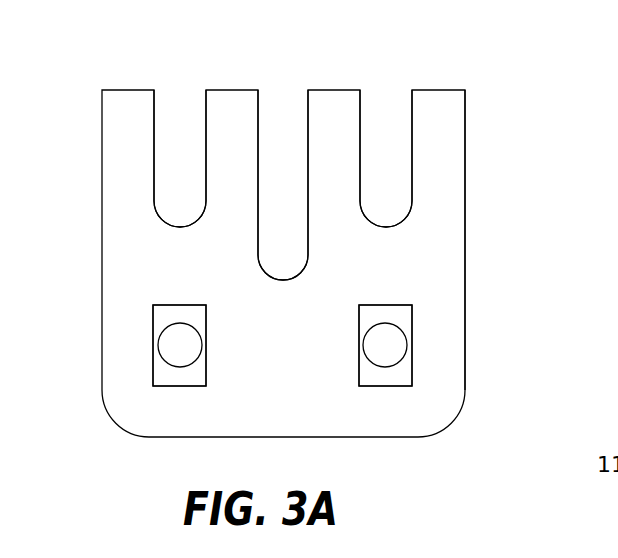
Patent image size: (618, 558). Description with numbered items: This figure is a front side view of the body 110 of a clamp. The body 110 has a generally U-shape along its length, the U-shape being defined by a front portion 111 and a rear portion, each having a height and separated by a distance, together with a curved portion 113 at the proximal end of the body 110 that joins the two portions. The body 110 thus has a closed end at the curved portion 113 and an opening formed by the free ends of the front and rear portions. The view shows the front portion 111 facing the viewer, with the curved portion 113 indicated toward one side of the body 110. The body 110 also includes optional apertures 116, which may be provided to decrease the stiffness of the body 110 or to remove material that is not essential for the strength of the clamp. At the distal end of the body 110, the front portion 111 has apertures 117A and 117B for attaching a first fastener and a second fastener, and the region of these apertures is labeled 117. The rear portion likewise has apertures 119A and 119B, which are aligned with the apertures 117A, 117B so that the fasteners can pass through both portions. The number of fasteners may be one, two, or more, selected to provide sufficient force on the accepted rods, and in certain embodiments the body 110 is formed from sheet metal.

The body 110 is at (118, 45).
The front portion 111 is at (300, 348).
The curved portion 113 is at (473, 112).
The apertures 116 is at (390, 90).
The mounting regions 117 is at (78, 272).
The aperture 117A is at (153, 313).
The aperture 117B is at (412, 312).
The aperture 119A is at (180, 367).
The aperture 119B is at (385, 367).